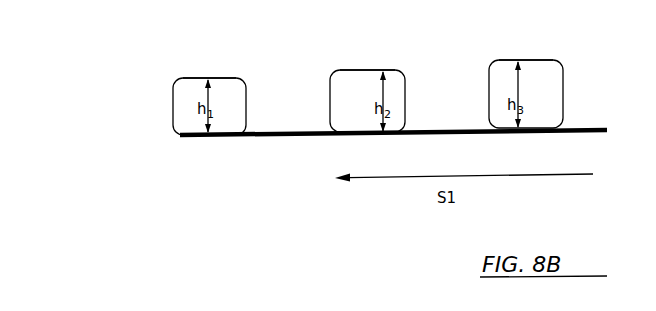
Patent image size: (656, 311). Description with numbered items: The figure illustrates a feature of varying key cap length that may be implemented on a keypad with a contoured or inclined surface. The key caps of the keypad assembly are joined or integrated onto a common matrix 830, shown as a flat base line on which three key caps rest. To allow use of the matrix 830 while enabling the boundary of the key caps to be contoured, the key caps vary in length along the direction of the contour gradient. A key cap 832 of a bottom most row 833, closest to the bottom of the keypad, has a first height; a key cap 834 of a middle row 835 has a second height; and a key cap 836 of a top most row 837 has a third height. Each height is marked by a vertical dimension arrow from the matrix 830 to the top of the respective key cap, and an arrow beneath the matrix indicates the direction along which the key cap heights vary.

The common matrix 830 is at (437, 129).
The key cap 832 is at (222, 90).
The bottom most row 833 is at (202, 68).
The key cap 834 is at (365, 92).
The middle row 835 is at (365, 67).
The key cap 836 is at (535, 83).
The top most row 837 is at (536, 51).